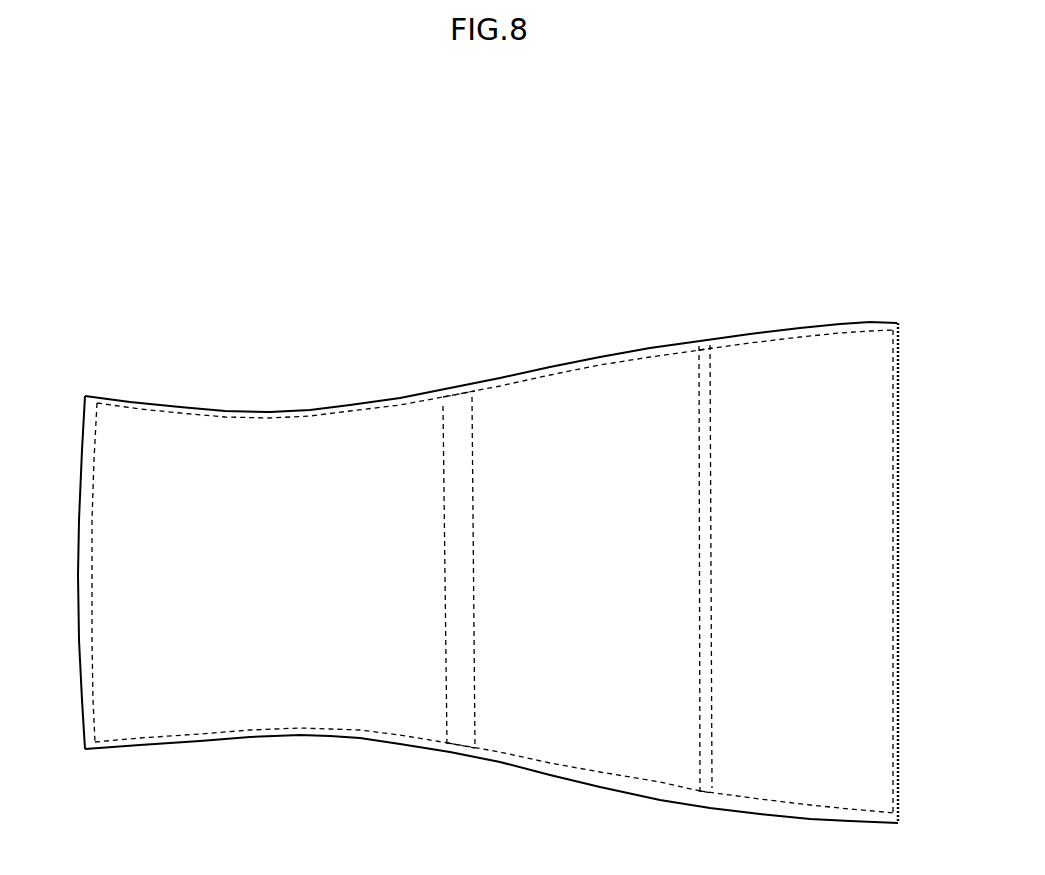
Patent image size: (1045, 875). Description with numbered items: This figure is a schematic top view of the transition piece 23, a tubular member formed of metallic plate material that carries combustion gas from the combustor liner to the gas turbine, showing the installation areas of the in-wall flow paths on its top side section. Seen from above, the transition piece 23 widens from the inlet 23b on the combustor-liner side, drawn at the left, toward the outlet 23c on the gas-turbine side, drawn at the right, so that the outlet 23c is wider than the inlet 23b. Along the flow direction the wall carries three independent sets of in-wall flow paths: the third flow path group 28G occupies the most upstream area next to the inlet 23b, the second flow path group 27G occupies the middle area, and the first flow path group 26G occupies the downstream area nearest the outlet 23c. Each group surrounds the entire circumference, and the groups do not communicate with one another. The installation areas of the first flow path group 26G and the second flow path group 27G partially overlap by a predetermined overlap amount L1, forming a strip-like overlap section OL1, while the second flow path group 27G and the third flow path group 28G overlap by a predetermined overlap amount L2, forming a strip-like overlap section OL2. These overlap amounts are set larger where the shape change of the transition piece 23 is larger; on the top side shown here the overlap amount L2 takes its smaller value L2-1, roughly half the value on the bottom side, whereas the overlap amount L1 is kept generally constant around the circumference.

The transition piece 23 is at (511, 334).
The inlet 23b is at (79, 574).
The outlet 23c is at (899, 593).
The first flow path group 26G is at (815, 330).
The second flow path group 27G is at (596, 376).
The third flow path group 28G is at (273, 417).
The overlap section OL1 is at (712, 330).
The overlap section OL2 is at (477, 385).
The overlap amount L1 is at (755, 556).
The overlap amount L2 is at (513, 556).
The overlap amount on the top side L2-1 is at (398, 583).